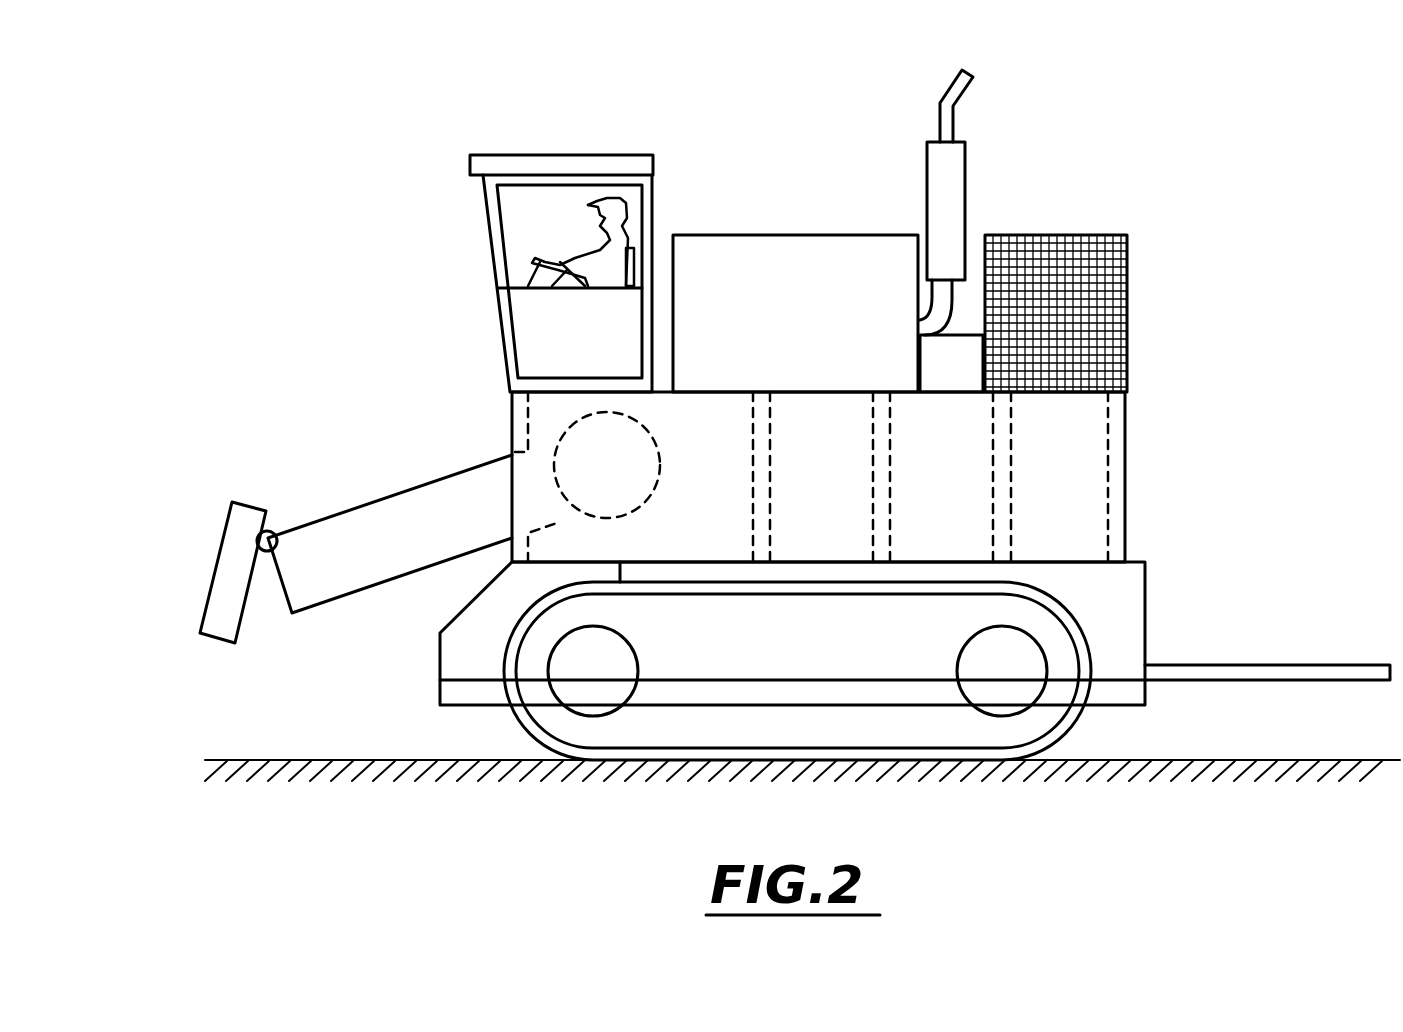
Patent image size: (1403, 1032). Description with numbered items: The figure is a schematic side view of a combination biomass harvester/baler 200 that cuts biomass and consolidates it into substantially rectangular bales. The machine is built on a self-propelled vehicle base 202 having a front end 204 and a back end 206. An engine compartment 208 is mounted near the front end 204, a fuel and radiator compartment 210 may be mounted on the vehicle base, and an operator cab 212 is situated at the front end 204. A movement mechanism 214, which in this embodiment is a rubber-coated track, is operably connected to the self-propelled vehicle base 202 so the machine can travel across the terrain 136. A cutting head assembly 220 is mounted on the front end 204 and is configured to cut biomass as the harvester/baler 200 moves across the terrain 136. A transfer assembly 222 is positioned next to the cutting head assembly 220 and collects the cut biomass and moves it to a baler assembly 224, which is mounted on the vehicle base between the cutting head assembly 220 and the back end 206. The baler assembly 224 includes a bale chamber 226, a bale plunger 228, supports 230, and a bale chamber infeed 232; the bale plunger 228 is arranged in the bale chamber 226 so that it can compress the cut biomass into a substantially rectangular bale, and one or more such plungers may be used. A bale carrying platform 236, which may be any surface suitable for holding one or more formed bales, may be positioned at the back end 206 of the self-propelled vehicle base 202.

The terrain 136 is at (272, 759).
The combination biomass harvester/baler 200 is at (280, 312).
The self-propelled vehicle base 202 is at (447, 700).
The front end 204 is at (225, 458).
The back end 206 is at (1320, 436).
The engine compartment 208 is at (768, 240).
The fuel and radiator compartment 210 is at (1073, 240).
The operator cab 212 is at (540, 154).
The movement mechanism 214 is at (1070, 712).
The cutting head assembly 220 is at (228, 597).
The transfer assembly 222 is at (393, 503).
The baler assembly 224 is at (1205, 658).
The bale chamber 226 is at (1100, 605).
The bale plunger 228 is at (465, 654).
The supports 230 is at (762, 463).
The bale chamber infeed 232 is at (643, 452).
The bale carrying platform 236 is at (1305, 665).